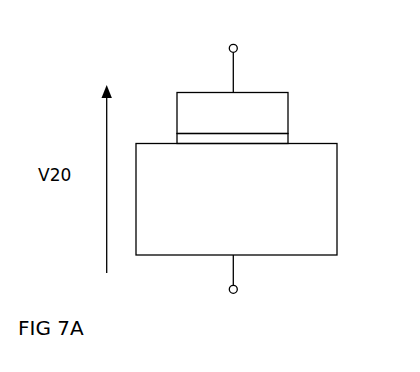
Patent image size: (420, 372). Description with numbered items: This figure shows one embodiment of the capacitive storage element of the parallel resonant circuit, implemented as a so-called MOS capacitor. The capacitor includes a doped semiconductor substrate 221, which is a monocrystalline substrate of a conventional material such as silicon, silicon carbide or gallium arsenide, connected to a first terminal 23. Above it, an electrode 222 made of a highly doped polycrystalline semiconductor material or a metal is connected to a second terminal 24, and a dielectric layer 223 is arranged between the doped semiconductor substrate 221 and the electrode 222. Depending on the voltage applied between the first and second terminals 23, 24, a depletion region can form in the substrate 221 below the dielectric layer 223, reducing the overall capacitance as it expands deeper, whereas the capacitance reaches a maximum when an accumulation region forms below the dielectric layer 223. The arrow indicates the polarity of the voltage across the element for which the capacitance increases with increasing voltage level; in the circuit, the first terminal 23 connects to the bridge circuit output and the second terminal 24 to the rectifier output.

The doped semiconductor substrate 221 is at (337, 205).
The electrode 222 is at (288, 108).
The dielectric layer 223 is at (288, 137).
The second terminal 24 is at (238, 46).
The first terminal 23 is at (238, 287).